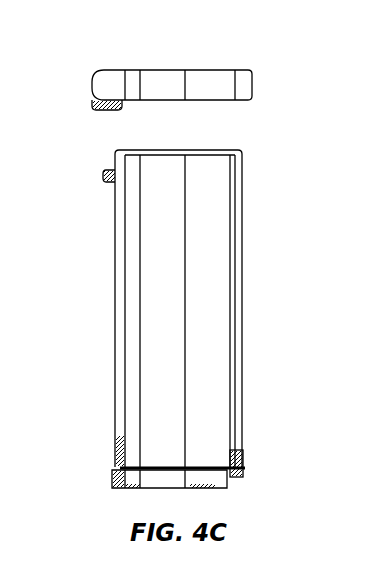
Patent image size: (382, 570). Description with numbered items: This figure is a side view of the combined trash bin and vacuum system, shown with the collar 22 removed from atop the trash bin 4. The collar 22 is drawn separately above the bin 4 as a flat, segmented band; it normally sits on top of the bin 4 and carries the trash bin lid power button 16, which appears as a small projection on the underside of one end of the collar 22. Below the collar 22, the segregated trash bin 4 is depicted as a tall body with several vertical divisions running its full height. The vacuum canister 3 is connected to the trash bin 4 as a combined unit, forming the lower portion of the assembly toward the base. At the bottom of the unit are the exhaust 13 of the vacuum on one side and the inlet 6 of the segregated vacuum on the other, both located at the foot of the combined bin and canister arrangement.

The collar 22 is at (207, 68).
The trash bin lid power button 16 is at (93, 108).
The trash bin 4 is at (242, 240).
The vacuum canister 3 is at (118, 440).
The exhaust 13 is at (112, 478).
The inlet 6 is at (233, 482).